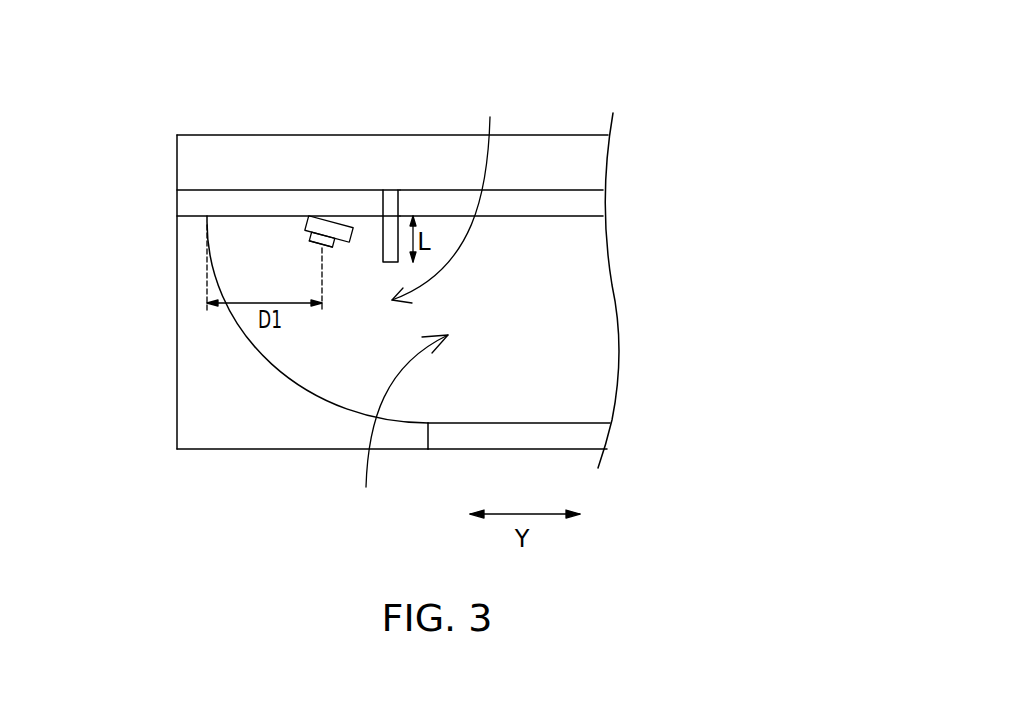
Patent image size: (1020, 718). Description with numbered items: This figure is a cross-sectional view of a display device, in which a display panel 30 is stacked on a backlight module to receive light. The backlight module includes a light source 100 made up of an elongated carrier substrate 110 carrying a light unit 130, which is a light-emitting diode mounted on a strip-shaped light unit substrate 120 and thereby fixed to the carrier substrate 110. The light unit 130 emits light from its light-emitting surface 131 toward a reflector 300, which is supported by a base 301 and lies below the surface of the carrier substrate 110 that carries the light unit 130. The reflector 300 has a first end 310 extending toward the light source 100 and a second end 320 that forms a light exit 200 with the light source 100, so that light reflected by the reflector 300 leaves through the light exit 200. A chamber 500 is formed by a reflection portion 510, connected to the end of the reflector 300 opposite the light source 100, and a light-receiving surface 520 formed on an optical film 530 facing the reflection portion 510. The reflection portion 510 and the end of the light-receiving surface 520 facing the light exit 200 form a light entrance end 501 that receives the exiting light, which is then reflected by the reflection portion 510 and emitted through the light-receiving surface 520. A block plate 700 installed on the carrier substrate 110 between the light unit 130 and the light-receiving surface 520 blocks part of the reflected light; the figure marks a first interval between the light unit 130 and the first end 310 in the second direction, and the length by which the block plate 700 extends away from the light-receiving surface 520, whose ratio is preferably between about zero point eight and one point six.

The display panel 30 is at (517, 135).
The light source 100 is at (246, 170).
The carrier substrate 110 is at (357, 203).
The light unit substrate 120 is at (326, 222).
The light unit 130 is at (310, 232).
The light-emitting surface 131 is at (307, 241).
The light exit 200 is at (452, 196).
The reflector 300 is at (283, 370).
The base 301 is at (306, 428).
The first end 310 is at (208, 216).
The second end 320 is at (429, 423).
The chamber 500 is at (588, 315).
The light entrance end 501 is at (398, 427).
The reflection portion 510 is at (580, 440).
The light-receiving surface 520 is at (553, 216).
The optical film 530 is at (566, 220).
The block plate 700 is at (390, 232).